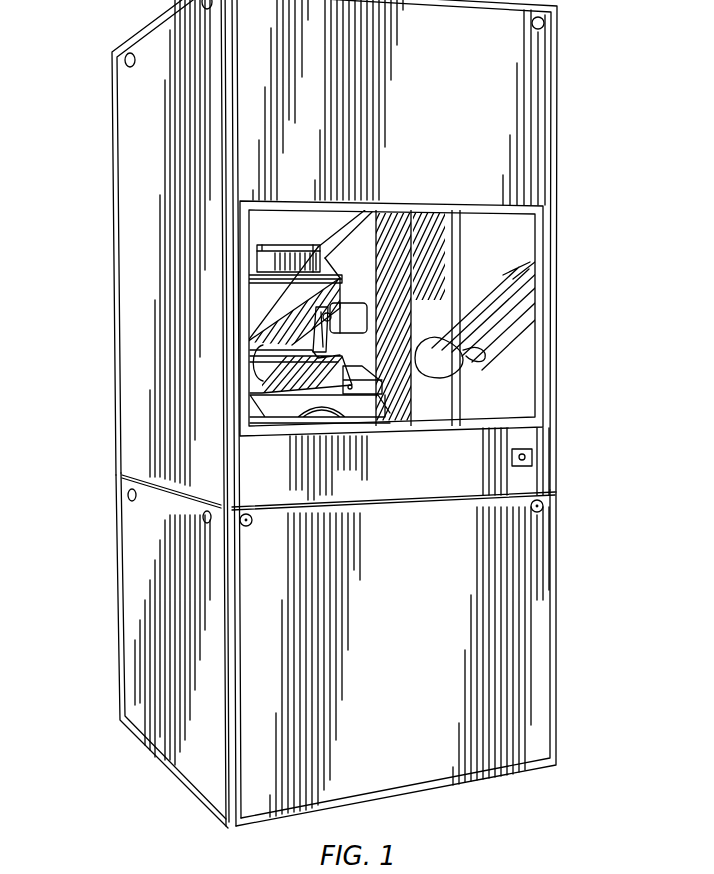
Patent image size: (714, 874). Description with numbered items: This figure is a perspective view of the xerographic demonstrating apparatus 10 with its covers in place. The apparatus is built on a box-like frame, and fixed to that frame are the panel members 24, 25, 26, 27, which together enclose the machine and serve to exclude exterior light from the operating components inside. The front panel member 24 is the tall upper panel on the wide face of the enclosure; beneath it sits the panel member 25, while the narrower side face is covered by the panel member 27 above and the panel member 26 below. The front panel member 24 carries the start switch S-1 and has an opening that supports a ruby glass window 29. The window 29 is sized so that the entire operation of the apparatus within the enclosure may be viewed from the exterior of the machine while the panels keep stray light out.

The xerographic demonstrating apparatus 10 is at (70, 120).
The front panel member 24 is at (547, 140).
The panel member 25 is at (543, 629).
The panel member 26 is at (128, 620).
The panel member 27 is at (121, 146).
The ruby glass window 29 is at (517, 348).
The start switch S-1 is at (532, 457).